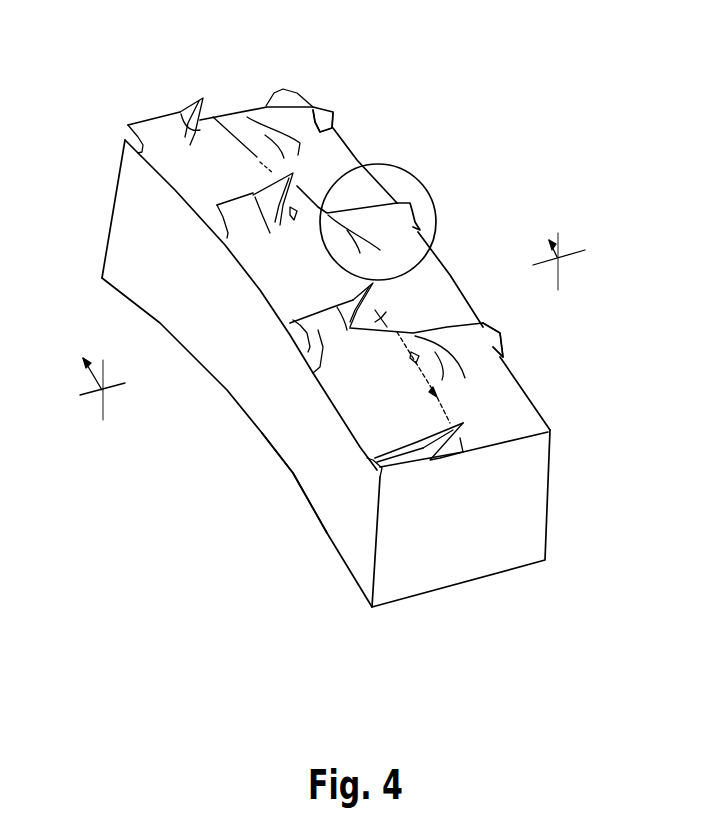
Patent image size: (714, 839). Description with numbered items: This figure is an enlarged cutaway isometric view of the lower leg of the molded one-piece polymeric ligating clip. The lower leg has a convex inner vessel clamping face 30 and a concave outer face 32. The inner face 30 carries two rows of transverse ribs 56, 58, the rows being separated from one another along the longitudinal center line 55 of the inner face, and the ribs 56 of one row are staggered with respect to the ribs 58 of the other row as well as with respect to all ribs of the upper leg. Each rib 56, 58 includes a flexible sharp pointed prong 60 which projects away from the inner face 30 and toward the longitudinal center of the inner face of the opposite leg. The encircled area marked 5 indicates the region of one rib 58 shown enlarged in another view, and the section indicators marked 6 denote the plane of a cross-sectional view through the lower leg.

The inner vessel clamping face 30 is at (510, 397).
The outer face 32 is at (323, 537).
The longitudinal center line 55 is at (397, 330).
The transverse ribs 56 is at (128, 127).
The transverse ribs 58 is at (337, 128).
The sharp pointed prong 60 is at (184, 91).
The detail view FIG. 5 is at (433, 197).
The section line 6- 6 is at (324, 318).